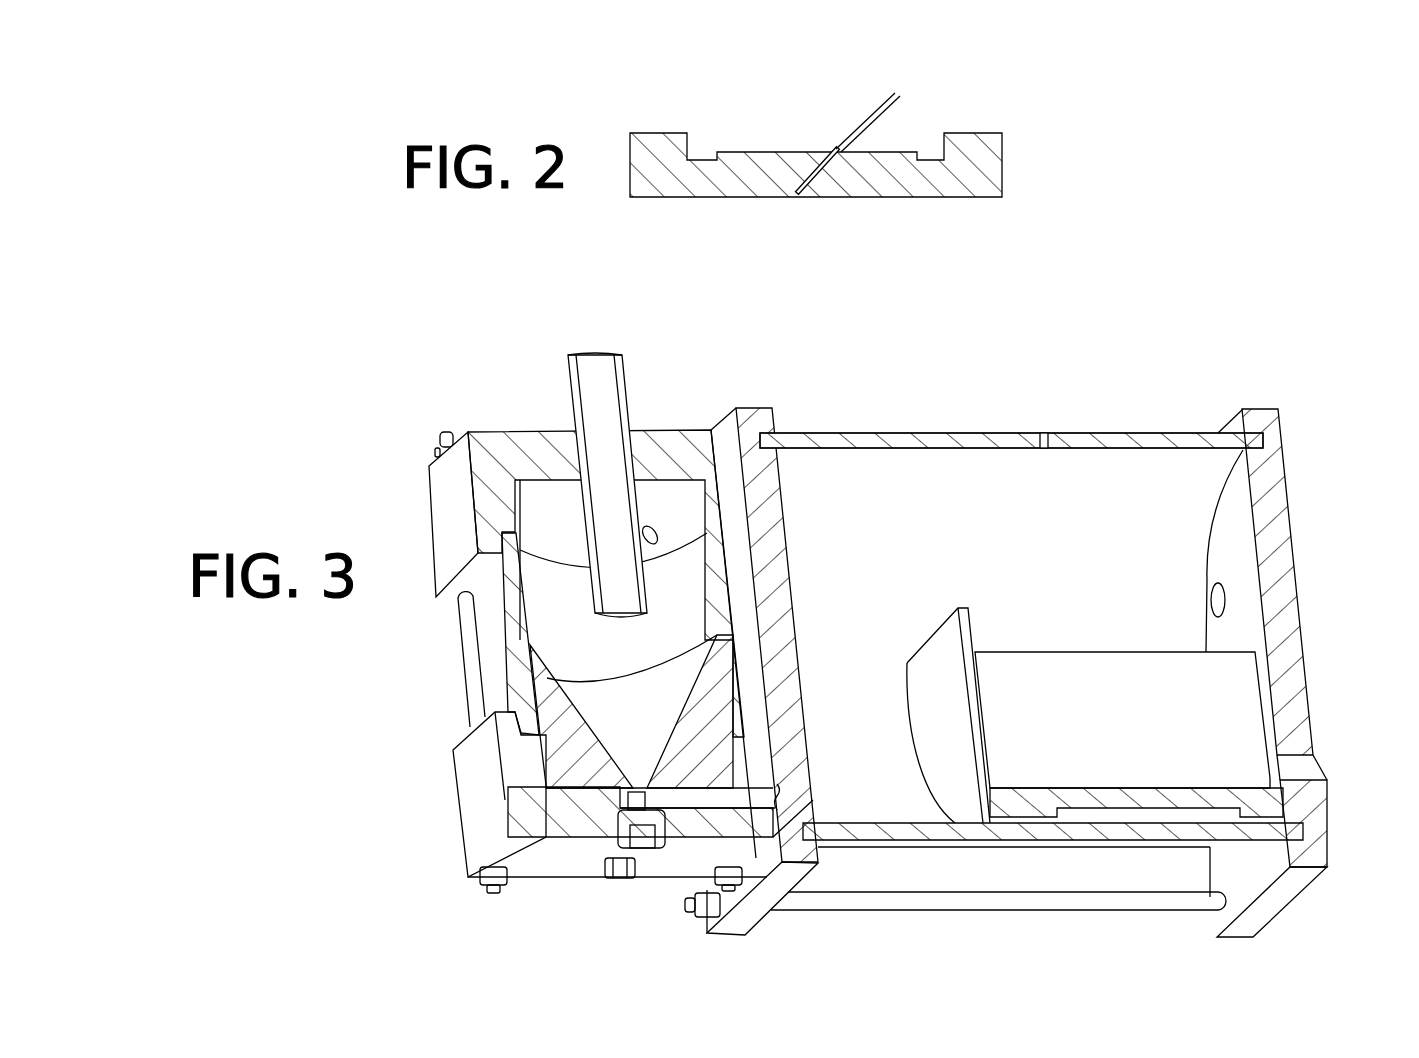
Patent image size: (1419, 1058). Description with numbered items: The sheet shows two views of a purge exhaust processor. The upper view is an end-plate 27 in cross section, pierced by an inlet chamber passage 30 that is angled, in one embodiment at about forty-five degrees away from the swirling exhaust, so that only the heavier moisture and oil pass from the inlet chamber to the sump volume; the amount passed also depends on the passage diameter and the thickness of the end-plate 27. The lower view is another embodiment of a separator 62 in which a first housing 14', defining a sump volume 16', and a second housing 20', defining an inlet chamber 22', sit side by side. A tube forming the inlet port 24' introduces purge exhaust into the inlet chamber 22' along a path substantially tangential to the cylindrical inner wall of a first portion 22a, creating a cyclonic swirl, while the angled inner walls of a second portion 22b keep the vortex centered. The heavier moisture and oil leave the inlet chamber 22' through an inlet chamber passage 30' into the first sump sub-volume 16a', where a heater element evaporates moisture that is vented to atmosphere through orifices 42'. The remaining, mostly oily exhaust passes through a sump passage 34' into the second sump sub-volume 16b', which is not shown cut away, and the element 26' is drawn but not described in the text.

In FIG. 2, the end-plate 27 is at (1004, 156).
In FIG. 2, the inlet chamber passage 30 is at (933, 120).
In FIG. 3, the separator 62 is at (1272, 383).
In FIG. 3, the second housing 20′ is at (525, 665).
In FIG. 3, the first portion of the inlet chamber 22a is at (553, 620).
In FIG. 3, the second portion of the inlet chamber 22b is at (580, 688).
In FIG. 3, the inlet chamber 22′ is at (638, 651).
In FIG. 3, the tube 26′ is at (569, 382).
In FIG. 3, the inlet port 24′ is at (649, 527).
In FIG. 3, the inlet chamber passage 30′ is at (728, 807).
In FIG. 3, the first housing 14′ is at (836, 433).
In FIG. 3, the orifices 42′ is at (1045, 433).
In FIG. 3, the sump volume 16′ is at (1132, 458).
In FIG. 3, the first sump sub-volume 16a′ is at (1129, 626).
In FIG. 3, the second sump sub-volume 16b′ is at (1129, 731).
In FIG. 3, the sump passage 34′ is at (973, 717).